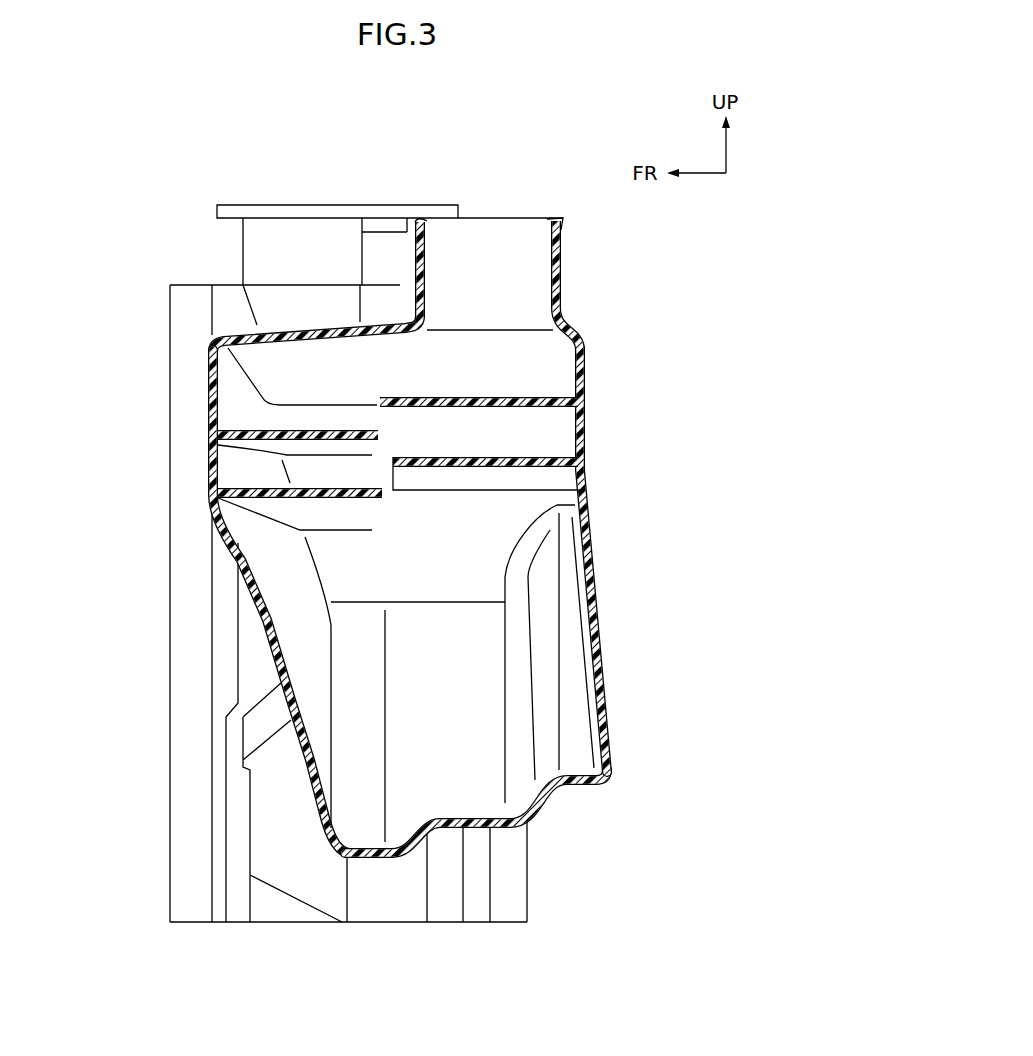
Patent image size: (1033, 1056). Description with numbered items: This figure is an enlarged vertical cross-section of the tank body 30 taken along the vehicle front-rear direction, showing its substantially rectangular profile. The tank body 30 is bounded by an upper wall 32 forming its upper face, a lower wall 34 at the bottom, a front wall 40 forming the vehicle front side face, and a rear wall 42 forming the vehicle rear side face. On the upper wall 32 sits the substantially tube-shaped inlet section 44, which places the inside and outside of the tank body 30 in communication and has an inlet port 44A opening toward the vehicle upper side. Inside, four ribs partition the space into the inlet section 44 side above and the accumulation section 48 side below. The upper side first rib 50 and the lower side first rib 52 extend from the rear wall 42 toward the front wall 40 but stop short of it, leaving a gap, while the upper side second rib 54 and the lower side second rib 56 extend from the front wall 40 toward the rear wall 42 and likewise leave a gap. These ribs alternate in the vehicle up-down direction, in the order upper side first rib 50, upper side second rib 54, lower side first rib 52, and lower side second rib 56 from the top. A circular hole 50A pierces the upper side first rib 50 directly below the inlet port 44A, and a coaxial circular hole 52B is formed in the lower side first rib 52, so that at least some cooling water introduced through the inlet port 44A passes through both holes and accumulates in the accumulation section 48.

The tank body 30 is at (430, 549).
The upper wall 32 is at (313, 328).
The lower wall 34 is at (447, 830).
The front wall 40 is at (203, 474).
The rear wall 42 is at (588, 467).
The inlet section 44 is at (558, 237).
The inlet port 44A is at (545, 222).
The accumulation section 48 is at (436, 733).
The upper side first rib 50 is at (525, 353).
The circular hole 50A is at (465, 398).
The lower side first rib 52 is at (532, 425).
The circular hole 52B is at (472, 457).
The upper side second rib 54 is at (280, 427).
The lower side second rib 56 is at (273, 503).